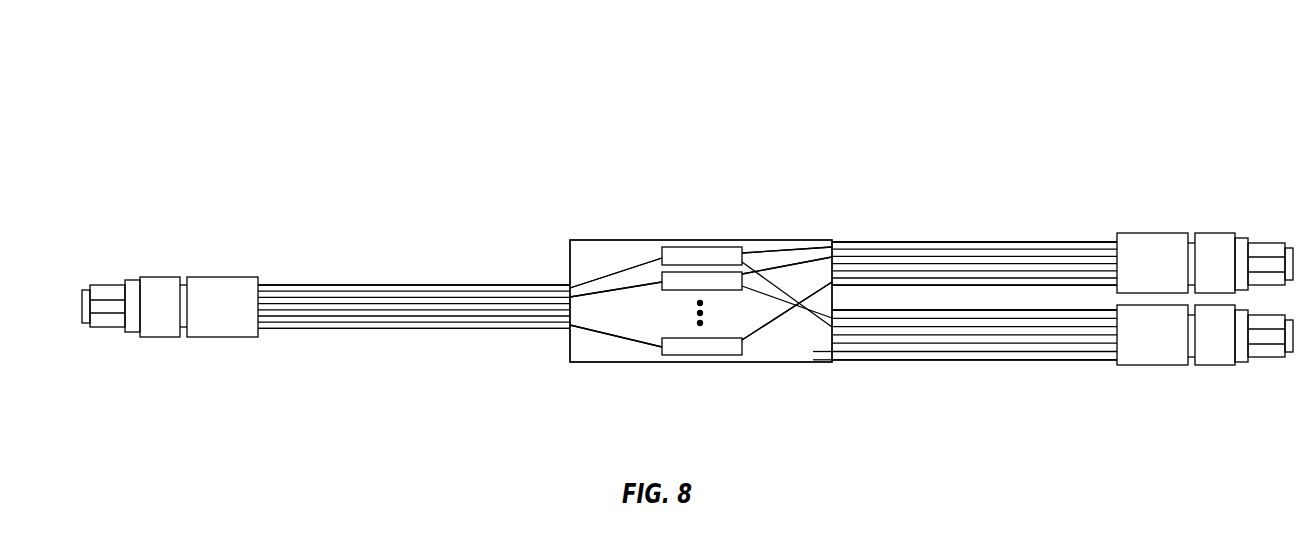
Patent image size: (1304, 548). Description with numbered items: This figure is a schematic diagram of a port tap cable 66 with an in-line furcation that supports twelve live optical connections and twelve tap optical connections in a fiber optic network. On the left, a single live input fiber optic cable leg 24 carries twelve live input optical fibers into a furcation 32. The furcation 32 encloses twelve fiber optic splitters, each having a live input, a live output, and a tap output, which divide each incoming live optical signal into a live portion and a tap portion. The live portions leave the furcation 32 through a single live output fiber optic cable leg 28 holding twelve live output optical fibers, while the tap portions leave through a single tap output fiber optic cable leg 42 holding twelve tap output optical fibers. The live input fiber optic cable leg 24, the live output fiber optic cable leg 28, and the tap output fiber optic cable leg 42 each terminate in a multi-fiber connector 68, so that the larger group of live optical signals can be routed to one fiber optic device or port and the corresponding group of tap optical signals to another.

The port tap cable 66 is at (778, 72).
The multi-fiber connector 68 is at (160, 337).
The live input fiber optic cable leg 24 is at (295, 285).
The furcation 32 is at (737, 240).
The live output fiber optic cable leg 28 is at (948, 242).
The tap output fiber optic cable leg 42 is at (1077, 363).